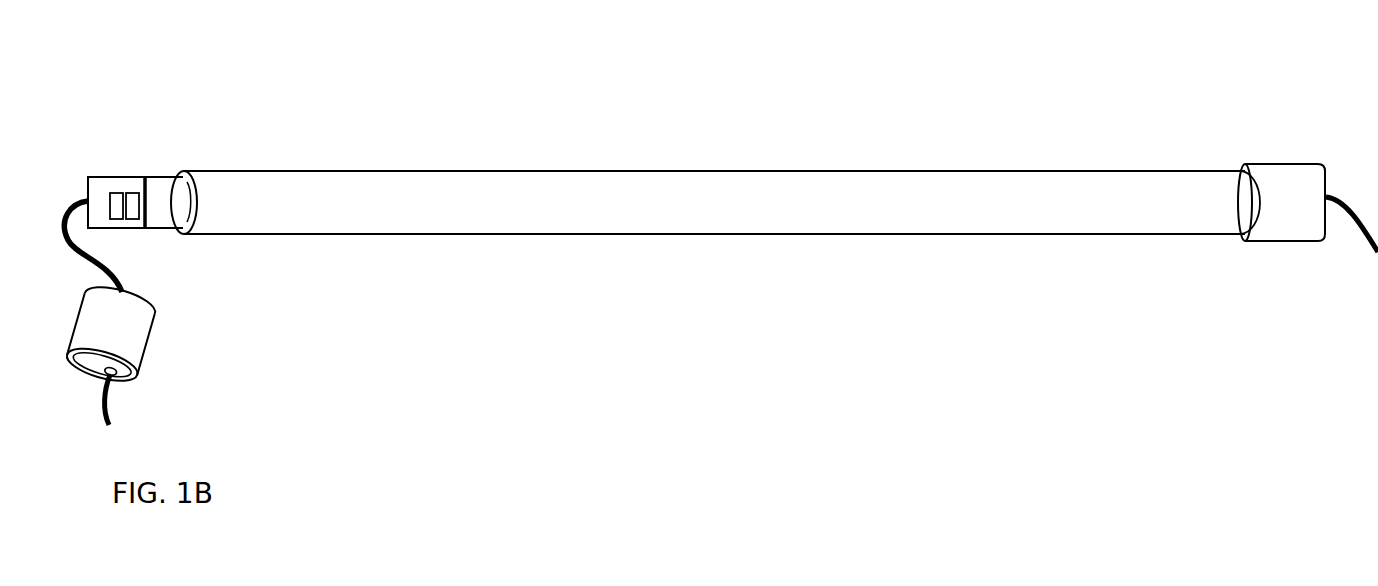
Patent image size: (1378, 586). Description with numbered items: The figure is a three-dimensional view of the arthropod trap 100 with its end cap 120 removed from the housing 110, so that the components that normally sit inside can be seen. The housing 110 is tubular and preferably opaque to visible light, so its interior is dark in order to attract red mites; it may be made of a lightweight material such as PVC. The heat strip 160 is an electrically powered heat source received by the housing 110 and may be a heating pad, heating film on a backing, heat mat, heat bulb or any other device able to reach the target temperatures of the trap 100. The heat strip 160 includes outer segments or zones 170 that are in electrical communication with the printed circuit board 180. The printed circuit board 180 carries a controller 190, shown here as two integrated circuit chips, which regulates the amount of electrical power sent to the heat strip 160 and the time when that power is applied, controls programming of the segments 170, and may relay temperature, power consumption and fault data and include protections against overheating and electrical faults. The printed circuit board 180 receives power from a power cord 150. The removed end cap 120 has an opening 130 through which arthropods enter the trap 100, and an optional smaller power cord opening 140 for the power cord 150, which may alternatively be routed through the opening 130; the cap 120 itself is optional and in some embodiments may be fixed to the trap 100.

The arthropod trap 100 is at (1011, 53).
The housing 110 is at (780, 171).
The end cap 120 is at (150, 327).
The opening 130 is at (75, 383).
The power cord opening 140 is at (133, 398).
The power cord 150 is at (113, 411).
The heat strip 160 is at (163, 177).
The outer segments 170 is at (155, 228).
The printed circuit board 180 is at (93, 177).
The controller 190 is at (127, 193).